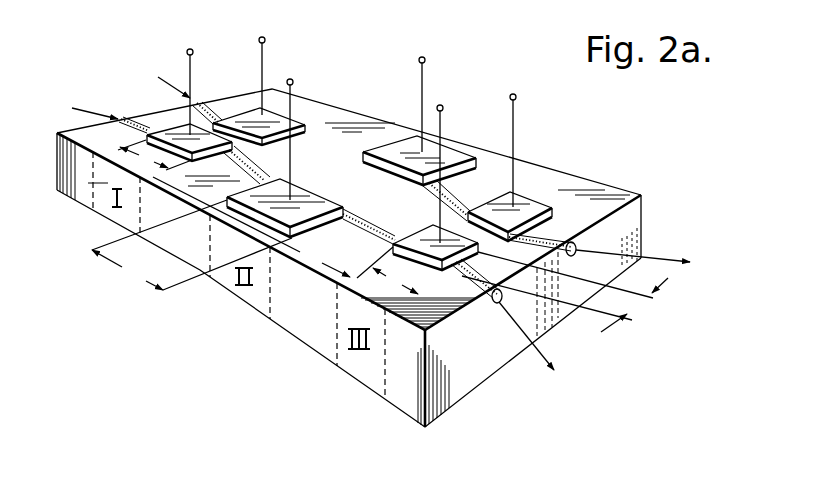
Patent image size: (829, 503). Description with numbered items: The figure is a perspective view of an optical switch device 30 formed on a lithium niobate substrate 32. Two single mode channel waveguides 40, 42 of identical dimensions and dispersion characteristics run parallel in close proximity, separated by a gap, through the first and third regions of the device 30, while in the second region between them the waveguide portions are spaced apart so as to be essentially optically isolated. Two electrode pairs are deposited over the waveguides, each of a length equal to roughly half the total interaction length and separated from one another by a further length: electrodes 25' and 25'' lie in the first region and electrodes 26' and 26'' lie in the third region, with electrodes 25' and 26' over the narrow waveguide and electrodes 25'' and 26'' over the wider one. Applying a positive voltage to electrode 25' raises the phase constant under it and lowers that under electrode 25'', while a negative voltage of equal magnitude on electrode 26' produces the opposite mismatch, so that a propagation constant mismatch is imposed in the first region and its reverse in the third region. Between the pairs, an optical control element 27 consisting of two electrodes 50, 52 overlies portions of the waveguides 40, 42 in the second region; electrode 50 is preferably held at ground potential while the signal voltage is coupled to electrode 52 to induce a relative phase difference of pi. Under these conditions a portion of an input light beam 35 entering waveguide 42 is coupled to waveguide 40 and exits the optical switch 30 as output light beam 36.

The optical switch device 30 is at (230, 371).
The lithium niobate substrate 32 is at (641, 222).
The light beam 35 is at (158, 73).
The electrode 25'' is at (174, 94).
The electrode 25' is at (275, 82).
The optical control element 27 is at (318, 192).
The electrode 50 is at (343, 207).
The electrode 52 is at (476, 158).
The electrode 26' is at (515, 158).
The electrode 26'' is at (435, 191).
The single mode channel waveguide 42 is at (566, 243).
The light beam 36 is at (537, 350).
The single mode channel waveguide 40 is at (497, 303).